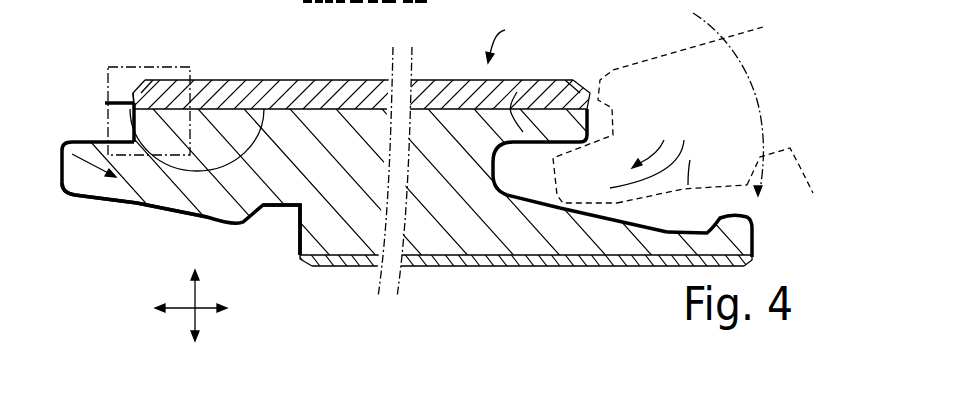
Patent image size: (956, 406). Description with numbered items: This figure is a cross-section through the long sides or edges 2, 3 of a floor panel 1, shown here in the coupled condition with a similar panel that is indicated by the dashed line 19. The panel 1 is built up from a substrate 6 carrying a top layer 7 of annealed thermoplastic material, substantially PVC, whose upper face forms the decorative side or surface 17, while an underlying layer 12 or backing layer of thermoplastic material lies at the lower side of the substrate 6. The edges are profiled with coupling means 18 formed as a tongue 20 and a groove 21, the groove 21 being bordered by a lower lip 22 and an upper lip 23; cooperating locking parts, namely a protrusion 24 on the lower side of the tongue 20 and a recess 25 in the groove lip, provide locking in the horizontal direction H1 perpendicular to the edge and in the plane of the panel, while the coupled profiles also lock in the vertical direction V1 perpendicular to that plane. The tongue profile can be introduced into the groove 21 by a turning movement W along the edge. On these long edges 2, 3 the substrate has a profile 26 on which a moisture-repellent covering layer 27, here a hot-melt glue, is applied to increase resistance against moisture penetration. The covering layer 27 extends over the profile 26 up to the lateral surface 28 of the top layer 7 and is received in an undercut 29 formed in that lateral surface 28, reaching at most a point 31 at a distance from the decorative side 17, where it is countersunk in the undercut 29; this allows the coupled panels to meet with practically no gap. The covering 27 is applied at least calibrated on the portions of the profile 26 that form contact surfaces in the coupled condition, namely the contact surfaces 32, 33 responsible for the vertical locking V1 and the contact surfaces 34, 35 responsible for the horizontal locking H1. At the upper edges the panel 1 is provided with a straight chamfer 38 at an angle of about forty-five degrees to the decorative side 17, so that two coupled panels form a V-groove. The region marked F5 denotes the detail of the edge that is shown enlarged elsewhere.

The floor panel 1 is at (505, 30).
The long side or edge 2 is at (148, 233).
The long side or edge 3 is at (664, 140).
The substrate 6 is at (460, 205).
The top layer 7 is at (206, 106).
The underlying layer or backing layer 12 is at (577, 267).
The surface or decorative side 17 is at (261, 82).
The coupling means 18 is at (72, 140).
The dashed line 19 is at (690, 160).
The tongue 20 is at (148, 182).
The groove 21 is at (684, 140).
The lower lip 22 is at (608, 222).
The upper lip 23 is at (517, 92).
The protrusion 24 is at (222, 200).
The recess 25 is at (695, 225).
The profile 26 is at (305, 80).
The covering layer 27 is at (80, 198).
The lateral surface 28 is at (105, 103).
The undercut or recess 29 is at (133, 104).
The point 31 is at (166, 80).
The contact surface 32 is at (104, 142).
The contact surface 33 is at (548, 142).
The contact surface 34 is at (258, 210).
The contact surface 35 is at (753, 245).
The chamfer 38 is at (133, 93).
The detail region F5 is at (150, 67).
The vertical direction V1 is at (195, 306).
The horizontal direction H1 is at (196, 308).
The turning movement W is at (757, 100).